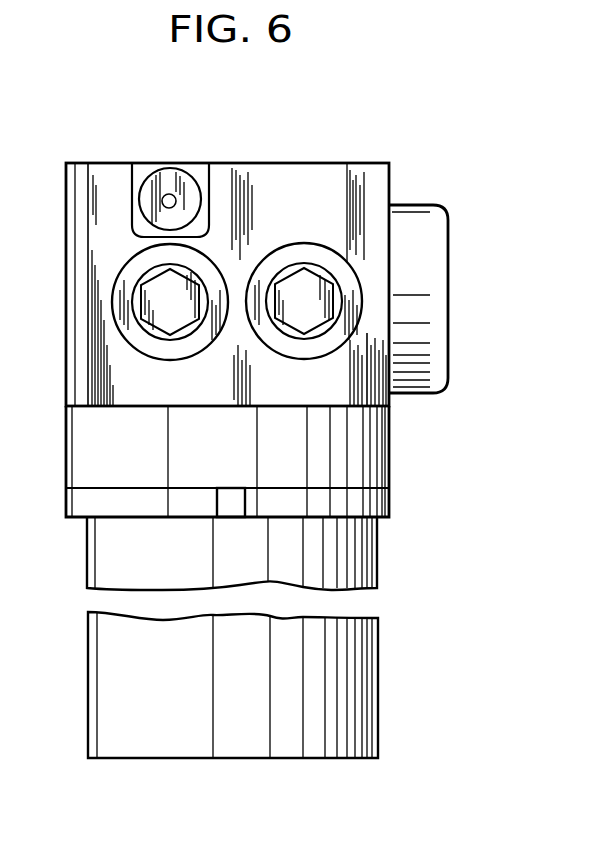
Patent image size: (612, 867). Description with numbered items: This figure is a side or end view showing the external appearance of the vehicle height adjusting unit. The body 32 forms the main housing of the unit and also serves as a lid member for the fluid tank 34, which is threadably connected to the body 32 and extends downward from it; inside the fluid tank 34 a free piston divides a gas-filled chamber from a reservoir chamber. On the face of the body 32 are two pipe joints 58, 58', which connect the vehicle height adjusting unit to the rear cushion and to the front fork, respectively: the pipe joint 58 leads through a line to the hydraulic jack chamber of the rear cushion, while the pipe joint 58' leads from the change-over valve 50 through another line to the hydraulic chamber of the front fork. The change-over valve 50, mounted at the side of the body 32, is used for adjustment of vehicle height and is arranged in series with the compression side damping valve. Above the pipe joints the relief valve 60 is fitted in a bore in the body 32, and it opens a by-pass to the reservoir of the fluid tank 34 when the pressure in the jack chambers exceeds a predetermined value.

The body 32 is at (372, 180).
The fluid tank 34 is at (370, 658).
The change-over valve 50 is at (455, 247).
The pipe joint 58 is at (120, 302).
The pipe joint 58' is at (374, 301).
The relief valve 60 is at (182, 164).